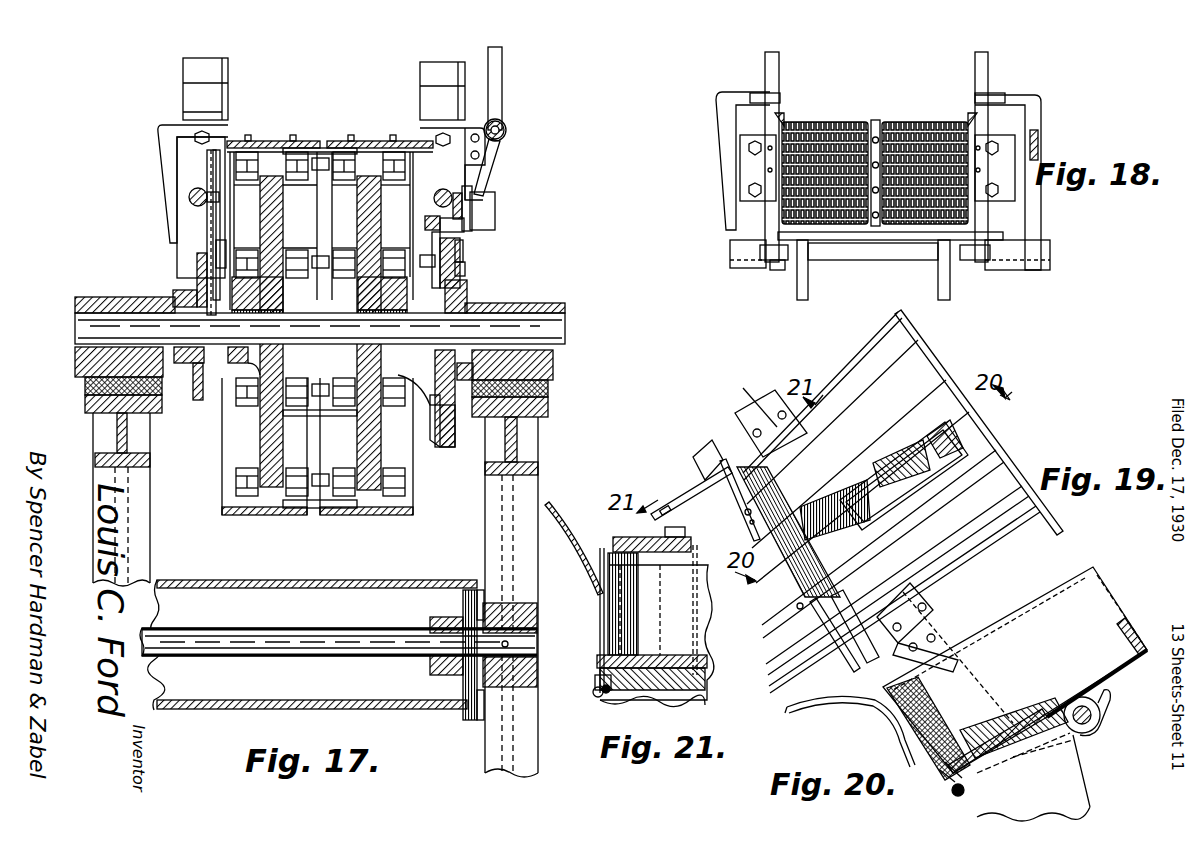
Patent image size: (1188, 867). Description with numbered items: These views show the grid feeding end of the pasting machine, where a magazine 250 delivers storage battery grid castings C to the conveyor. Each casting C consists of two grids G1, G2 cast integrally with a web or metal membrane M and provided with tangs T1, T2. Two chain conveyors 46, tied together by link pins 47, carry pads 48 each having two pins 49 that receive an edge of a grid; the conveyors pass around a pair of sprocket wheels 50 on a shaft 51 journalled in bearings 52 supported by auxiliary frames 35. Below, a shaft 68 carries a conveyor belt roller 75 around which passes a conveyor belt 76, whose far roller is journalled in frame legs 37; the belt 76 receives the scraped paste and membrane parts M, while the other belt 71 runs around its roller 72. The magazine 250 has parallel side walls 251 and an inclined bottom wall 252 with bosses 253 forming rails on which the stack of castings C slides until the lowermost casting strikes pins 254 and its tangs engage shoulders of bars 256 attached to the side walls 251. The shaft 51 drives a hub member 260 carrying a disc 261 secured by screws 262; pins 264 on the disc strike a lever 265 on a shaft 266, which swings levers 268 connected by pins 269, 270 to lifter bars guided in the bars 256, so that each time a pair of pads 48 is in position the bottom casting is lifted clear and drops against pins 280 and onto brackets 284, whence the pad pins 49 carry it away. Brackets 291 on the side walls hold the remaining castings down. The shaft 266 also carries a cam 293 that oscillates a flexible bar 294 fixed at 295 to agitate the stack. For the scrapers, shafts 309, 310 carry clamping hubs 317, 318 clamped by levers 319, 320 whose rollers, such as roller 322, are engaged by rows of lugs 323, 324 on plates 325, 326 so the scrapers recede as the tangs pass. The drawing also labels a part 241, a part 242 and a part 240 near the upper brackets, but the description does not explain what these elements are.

In FIG. 17, the magazine 250 is at (272, 55).
In FIG. 19, the magazine 250 is at (1057, 381).
In FIG. 17, the lever 241 is at (502, 72).
In FIG. 17, the pivot 242 is at (503, 122).
In FIG. 17, the pivot pin 240 is at (505, 130).
In FIG. 17, the bracket 291 is at (178, 135).
In FIG. 21, the bracket 291 is at (650, 535).
In FIG. 18, the bracket 291 is at (735, 108).
In FIG. 19, the bracket 291 is at (770, 410).
In FIG. 17, the grid G2 is at (278, 141).
In FIG. 18, the grid G2 is at (826, 122).
In FIG. 17, the grid G1 is at (364, 141).
In FIG. 18, the grid G1 is at (925, 122).
In FIG. 17, the pin 49 is at (245, 141).
In FIG. 17, the grid holder or pad 48 is at (300, 141).
In FIG. 17, the roller 72 is at (215, 143).
In FIG. 17, the conveyor belt 71 is at (425, 145).
In FIG. 17, the clamping hub 318 is at (190, 197).
In FIG. 17, the shaft 310 is at (196, 205).
In FIG. 17, the screw bolt or lever 320 is at (208, 248).
In FIG. 17, the chain conveyor 46 is at (252, 262).
In FIG. 17, the link pin 47 is at (322, 170).
In FIG. 17, the clamping hub 317 is at (452, 195).
In FIG. 17, the lever 265 is at (480, 196).
In FIG. 17, the shaft 309 is at (462, 208).
In FIG. 17, the pin 264 is at (465, 228).
In FIG. 17, the screw bolt or lever 319 is at (445, 248).
In FIG. 17, the screw 262 is at (465, 283).
In FIG. 20, the screw 262 is at (985, 760).
In FIG. 17, the bearing 52 is at (105, 297).
In FIG. 17, the shaft 51 is at (75, 326).
In FIG. 17, the roller 322 is at (213, 232).
In FIG. 17, the lug 323 is at (470, 375).
In FIG. 17, the plate 325 is at (515, 350).
In FIG. 17, the lug 324 is at (213, 395).
In FIG. 17, the plate 326 is at (200, 394).
In FIG. 17, the auxiliary frame 35 is at (85, 400).
In FIG. 17, the disc 261 is at (455, 420).
In FIG. 17, the hub member 260 is at (432, 455).
In FIG. 17, the frame leg 37 is at (150, 522).
In FIG. 17, the sprocket wheel 50 is at (270, 512).
In FIG. 17, the shaft 68 is at (237, 655).
In FIG. 17, the conveyor belt roller 75 is at (318, 700).
In FIG. 17, the conveyor belt 76 is at (368, 710).
In FIG. 21, the bracket 284 is at (552, 508).
In FIG. 18, the bracket 284 is at (766, 68).
In FIG. 19, the bracket 284 is at (653, 517).
In FIG. 20, the bracket 284 is at (822, 712).
In FIG. 21, the pin 280 is at (697, 562).
In FIG. 19, the pin 280 is at (745, 520).
In FIG. 21, the lever 268 is at (698, 690).
In FIG. 18, the lever 268 is at (784, 270).
In FIG. 21, the pin 269 is at (608, 700).
In FIG. 18, the pin 269 is at (770, 270).
In FIG. 21, the pin 270 is at (596, 698).
In FIG. 20, the pin 270 is at (952, 793).
In FIG. 18, the tang T2 is at (780, 118).
In FIG. 18, the tang T1 is at (985, 130).
In FIG. 18, the web or metal membrane M is at (877, 120).
In FIG. 18, the shaft 266 is at (913, 255).
In FIG. 20, the shaft 266 is at (1100, 713).
In FIG. 19, the boss 253 is at (925, 385).
In FIG. 19, the side wall 251 is at (860, 383).
In FIG. 19, the bottom wall 252 is at (996, 448).
In FIG. 19, the bar 294 is at (887, 467).
In FIG. 20, the bar 294 is at (1042, 700).
In FIG. 19, the grid casting C is at (788, 522).
In FIG. 19, the pin 254 is at (740, 512).
In FIG. 19, the bar 256 is at (708, 447).
In FIG. 20, the cam 293 is at (1000, 715).
In FIG. 20, the fixing point 295 is at (960, 745).